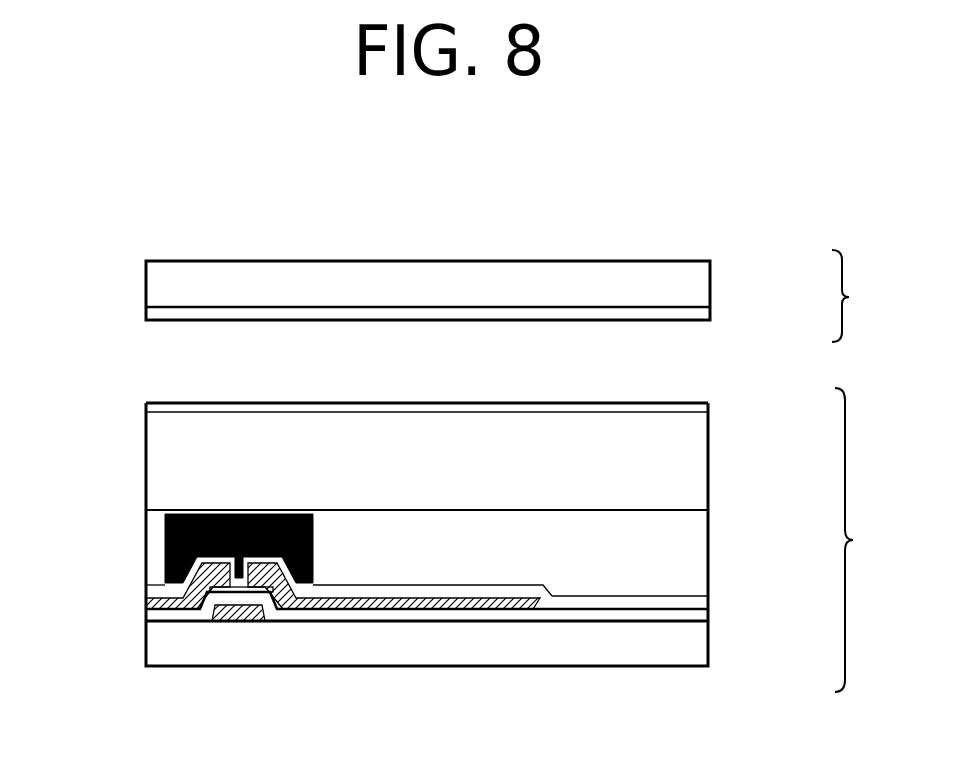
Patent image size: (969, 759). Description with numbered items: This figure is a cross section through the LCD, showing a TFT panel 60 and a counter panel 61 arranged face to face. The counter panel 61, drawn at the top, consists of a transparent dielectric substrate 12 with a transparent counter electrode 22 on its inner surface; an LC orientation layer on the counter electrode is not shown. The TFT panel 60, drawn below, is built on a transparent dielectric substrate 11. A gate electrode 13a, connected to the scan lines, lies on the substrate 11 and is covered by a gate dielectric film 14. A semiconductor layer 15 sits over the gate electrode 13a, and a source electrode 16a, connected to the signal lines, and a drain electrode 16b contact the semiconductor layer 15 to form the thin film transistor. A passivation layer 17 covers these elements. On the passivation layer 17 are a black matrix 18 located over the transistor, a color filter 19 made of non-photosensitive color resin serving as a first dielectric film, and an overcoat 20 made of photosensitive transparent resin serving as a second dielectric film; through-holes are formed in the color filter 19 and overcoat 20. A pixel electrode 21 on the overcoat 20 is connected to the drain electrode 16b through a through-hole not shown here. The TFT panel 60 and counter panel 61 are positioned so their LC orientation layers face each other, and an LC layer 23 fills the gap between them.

The transparent dielectric substrate 11 is at (698, 648).
The transparent dielectric substrate 12 is at (710, 276).
The gate electrode 13a is at (248, 621).
The gate dielectric film 14 is at (700, 618).
The semiconductor layer 15 is at (205, 621).
The source electrode 16a is at (150, 605).
The drain electrode 16b is at (393, 609).
The passivation layer 17 is at (700, 600).
The black matrix 18 is at (163, 543).
The color filter 19 is at (690, 535).
The overcoat 20 is at (695, 465).
The pixel electrode 21 is at (708, 405).
The transparent counter electrode 22 is at (710, 313).
The LC layer 23 is at (163, 370).
The TFT panel 60 is at (876, 540).
The counter panel 61 is at (868, 296).